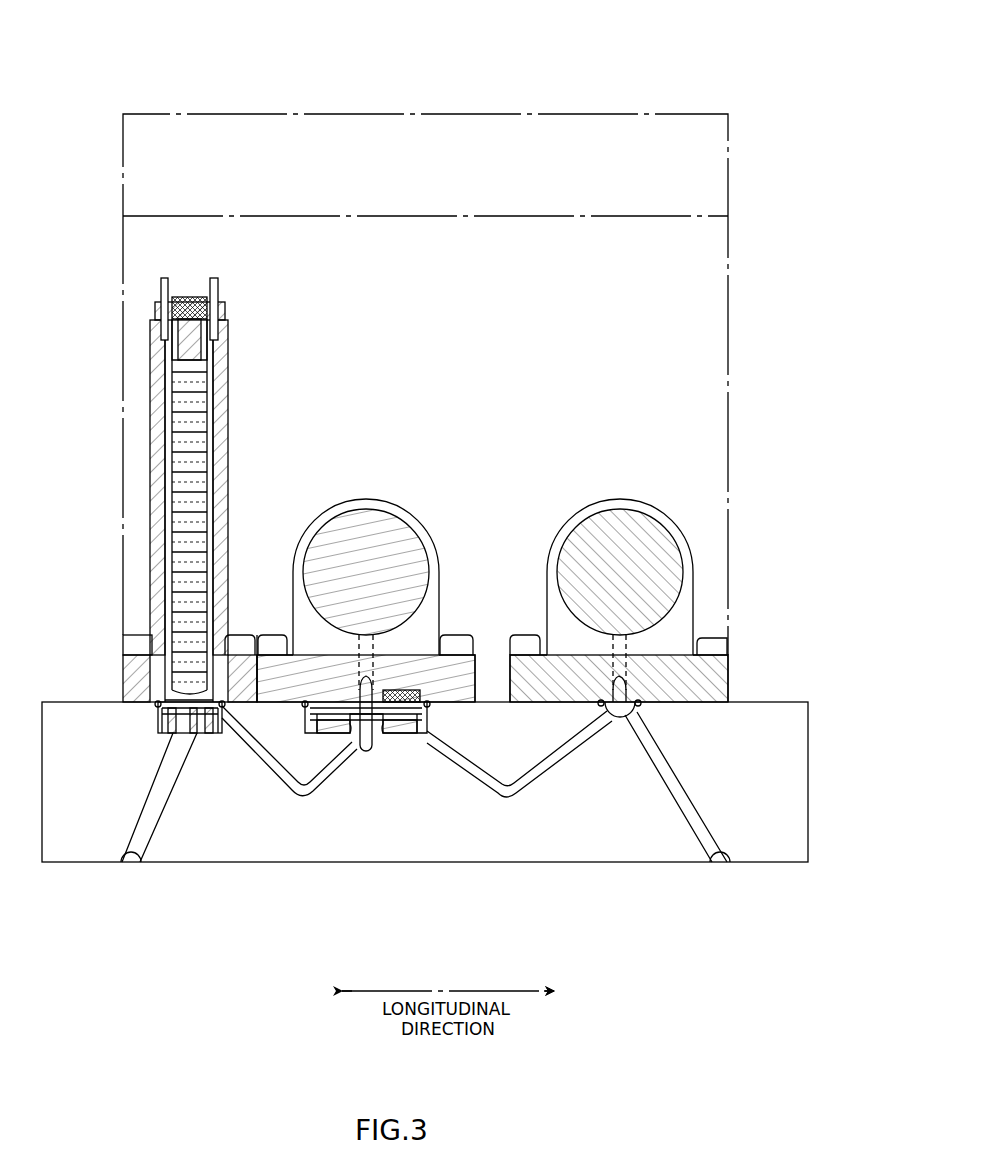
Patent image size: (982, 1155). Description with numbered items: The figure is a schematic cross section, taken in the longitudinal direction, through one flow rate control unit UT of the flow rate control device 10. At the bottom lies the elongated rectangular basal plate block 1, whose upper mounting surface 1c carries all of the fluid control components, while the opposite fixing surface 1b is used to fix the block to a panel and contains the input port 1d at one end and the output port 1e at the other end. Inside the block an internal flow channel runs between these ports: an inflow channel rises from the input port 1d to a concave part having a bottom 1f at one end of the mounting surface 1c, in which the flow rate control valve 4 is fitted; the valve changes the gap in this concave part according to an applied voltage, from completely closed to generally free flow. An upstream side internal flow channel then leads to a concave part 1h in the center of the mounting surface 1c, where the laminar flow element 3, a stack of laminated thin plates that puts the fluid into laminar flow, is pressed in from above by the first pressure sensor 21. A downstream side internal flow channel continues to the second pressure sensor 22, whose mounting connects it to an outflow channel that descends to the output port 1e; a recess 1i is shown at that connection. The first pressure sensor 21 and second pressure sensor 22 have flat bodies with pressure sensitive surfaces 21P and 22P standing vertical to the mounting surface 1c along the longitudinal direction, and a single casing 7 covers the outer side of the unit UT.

The flow rate control device 10 is at (536, 89).
The casing 7 is at (730, 284).
The flow rate control unit UT is at (448, 398).
The flow rate control valve 4 is at (234, 290).
The first pressure sensor 21 is at (419, 501).
The pressure sensitive surface 21P is at (366, 508).
The second pressure sensor 22 is at (672, 500).
The pressure sensitive surface 22P is at (620, 508).
The mounting surface 1c is at (497, 700).
The basal plate block 1 is at (465, 870).
The fixing surface 1b is at (290, 865).
The concave part having a bottom 1f is at (216, 735).
The laminar flow element 3 is at (372, 742).
The concave part 1h is at (410, 736).
The input port 1d is at (130, 865).
The output port 1e is at (725, 865).
The port recess 1i is at (640, 708).